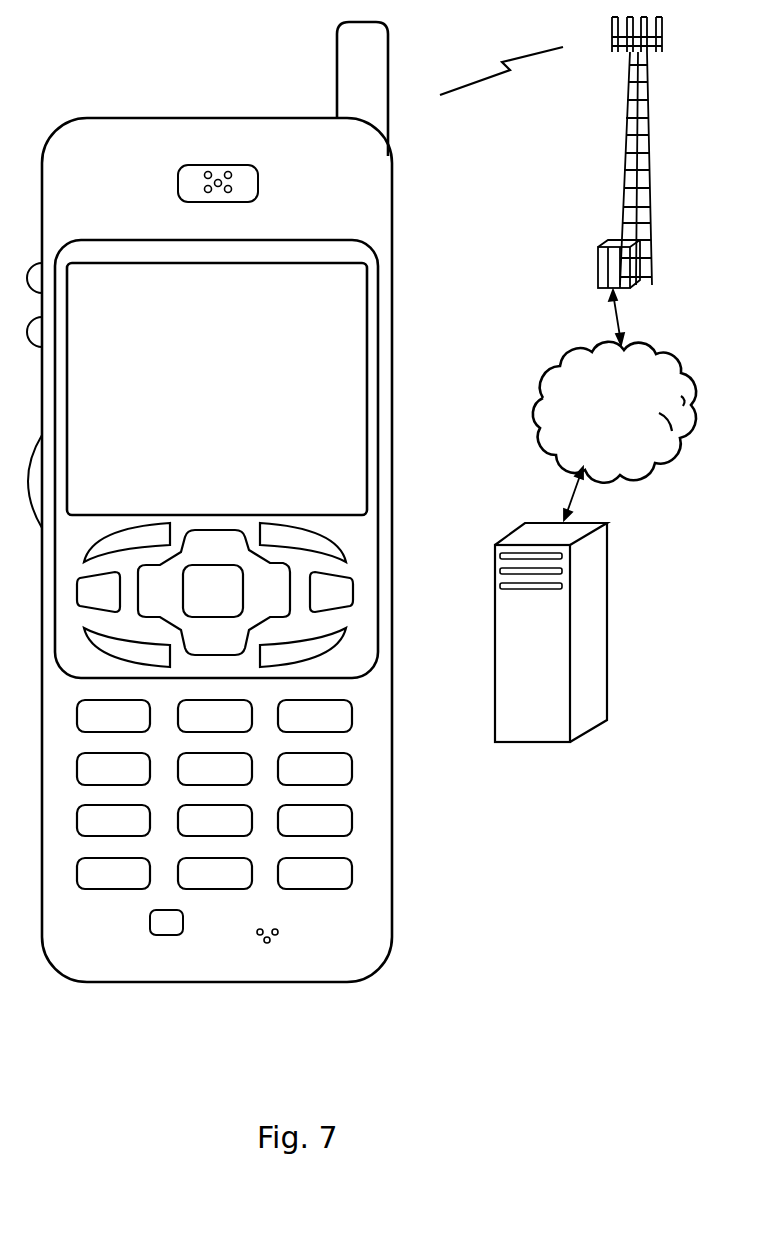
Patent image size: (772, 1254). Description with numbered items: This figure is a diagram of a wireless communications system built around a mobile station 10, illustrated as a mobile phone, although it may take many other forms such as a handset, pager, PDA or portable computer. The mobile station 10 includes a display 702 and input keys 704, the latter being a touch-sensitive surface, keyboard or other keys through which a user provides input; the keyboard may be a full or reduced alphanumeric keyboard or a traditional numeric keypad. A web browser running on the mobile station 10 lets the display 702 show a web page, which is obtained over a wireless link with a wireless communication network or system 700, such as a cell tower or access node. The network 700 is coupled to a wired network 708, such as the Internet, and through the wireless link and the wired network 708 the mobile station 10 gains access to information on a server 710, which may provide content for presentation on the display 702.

The mobile station 10 is at (88, 981).
The wireless communication network 700 is at (623, 165).
The display 702 is at (378, 272).
The input keys 704 is at (400, 523).
The wired network 708 is at (553, 452).
The server 710 is at (538, 742).